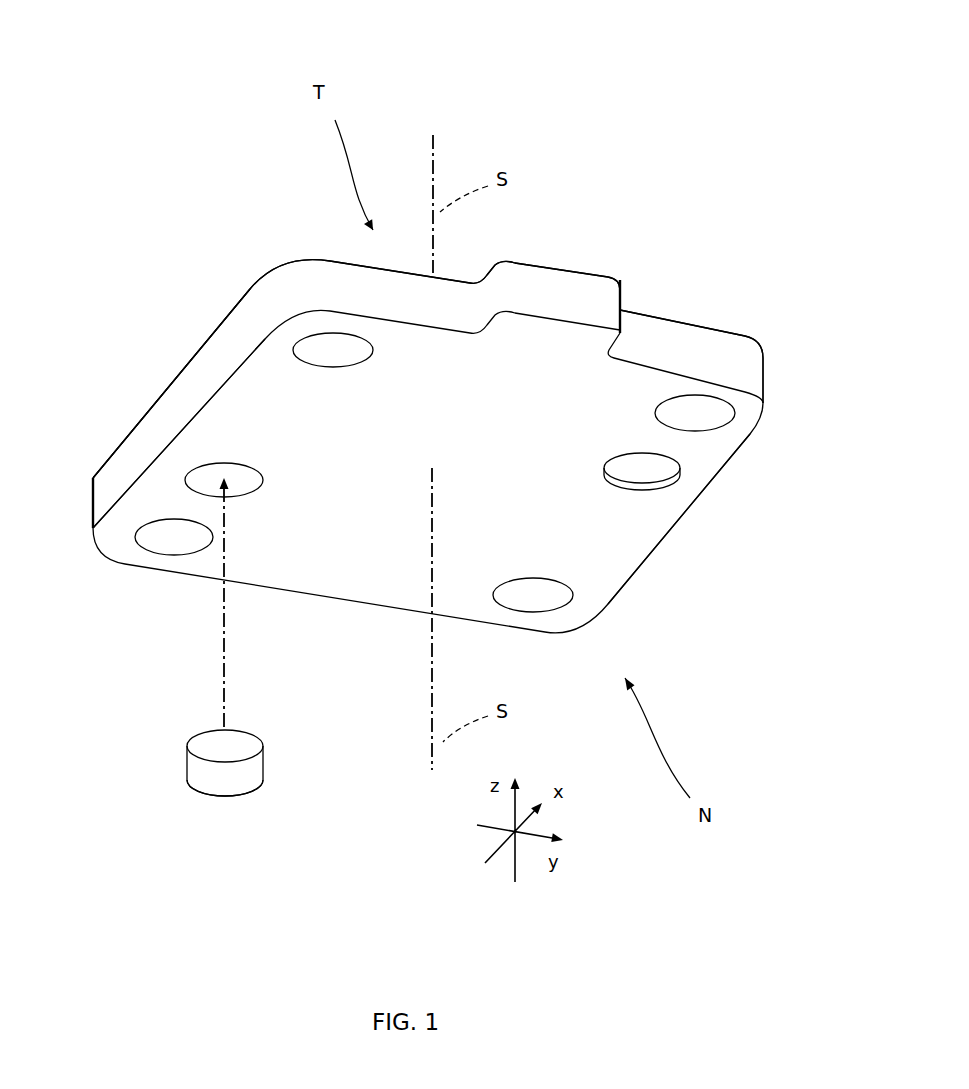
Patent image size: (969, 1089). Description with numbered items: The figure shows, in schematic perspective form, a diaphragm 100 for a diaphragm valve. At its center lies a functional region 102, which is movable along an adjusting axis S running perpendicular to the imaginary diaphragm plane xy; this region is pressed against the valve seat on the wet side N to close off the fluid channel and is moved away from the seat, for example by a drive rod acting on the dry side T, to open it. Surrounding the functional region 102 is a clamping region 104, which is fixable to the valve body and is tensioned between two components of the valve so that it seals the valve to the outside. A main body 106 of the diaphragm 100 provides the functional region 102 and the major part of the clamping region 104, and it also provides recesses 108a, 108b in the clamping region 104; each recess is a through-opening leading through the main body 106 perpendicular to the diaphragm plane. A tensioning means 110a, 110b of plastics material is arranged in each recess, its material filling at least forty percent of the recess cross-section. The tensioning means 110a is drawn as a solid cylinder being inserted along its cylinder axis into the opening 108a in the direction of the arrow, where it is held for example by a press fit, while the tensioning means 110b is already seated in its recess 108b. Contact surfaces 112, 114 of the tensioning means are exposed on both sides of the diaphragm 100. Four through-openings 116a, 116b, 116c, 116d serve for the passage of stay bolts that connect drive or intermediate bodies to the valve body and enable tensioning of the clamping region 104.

The diaphragm 100 is at (140, 193).
The functional region 102 is at (365, 502).
The clamping region 104 is at (607, 547).
The main body 106 is at (230, 397).
The recess 108a is at (200, 480).
The recess 108b is at (663, 487).
The tensioning means 110a is at (188, 760).
The tensioning means 110b is at (660, 466).
The contact surface 112 is at (217, 788).
The contact surface 114 is at (238, 722).
The through-opening 116a is at (333, 347).
The through-opening 116b is at (683, 413).
The through-opening 116c is at (535, 600).
The through-opening 116d is at (160, 542).